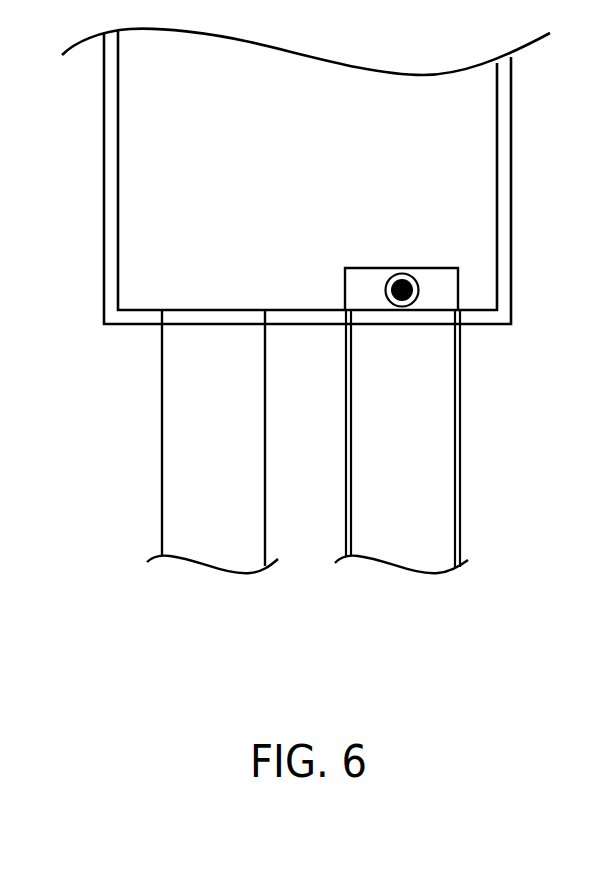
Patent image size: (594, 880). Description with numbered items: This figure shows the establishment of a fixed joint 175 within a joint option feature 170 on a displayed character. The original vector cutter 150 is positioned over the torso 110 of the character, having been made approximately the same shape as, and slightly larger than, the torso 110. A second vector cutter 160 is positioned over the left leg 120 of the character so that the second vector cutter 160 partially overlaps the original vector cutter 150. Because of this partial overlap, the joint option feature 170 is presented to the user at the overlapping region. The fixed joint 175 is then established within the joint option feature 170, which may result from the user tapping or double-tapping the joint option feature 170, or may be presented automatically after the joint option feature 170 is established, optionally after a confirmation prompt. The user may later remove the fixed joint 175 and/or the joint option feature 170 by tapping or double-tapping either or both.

The torso 110 is at (497, 175).
The vector cutter 150 is at (511, 223).
The left leg 120 is at (455, 425).
The second vector cutter 160 is at (460, 482).
The joint option feature 170 is at (401, 273).
The fixed joint 175 is at (388, 277).